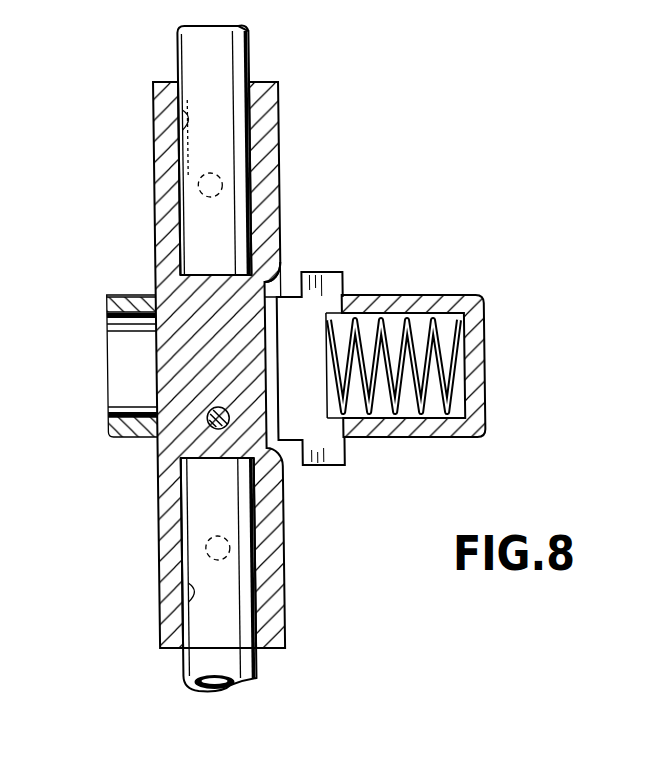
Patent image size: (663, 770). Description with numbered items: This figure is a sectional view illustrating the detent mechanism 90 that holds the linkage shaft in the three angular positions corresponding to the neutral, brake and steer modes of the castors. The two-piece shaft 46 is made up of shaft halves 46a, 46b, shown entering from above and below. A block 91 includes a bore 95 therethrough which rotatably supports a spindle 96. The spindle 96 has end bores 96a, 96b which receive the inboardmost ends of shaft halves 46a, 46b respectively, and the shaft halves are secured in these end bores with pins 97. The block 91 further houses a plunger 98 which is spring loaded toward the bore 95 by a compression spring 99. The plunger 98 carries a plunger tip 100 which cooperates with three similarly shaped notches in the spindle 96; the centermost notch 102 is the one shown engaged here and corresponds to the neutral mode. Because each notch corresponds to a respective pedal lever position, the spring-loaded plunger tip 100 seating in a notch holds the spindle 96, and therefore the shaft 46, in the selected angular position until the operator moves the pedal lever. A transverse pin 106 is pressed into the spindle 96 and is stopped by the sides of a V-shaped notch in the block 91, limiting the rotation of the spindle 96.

The two-piece shaft 46 is at (211, 697).
The shaft half 46a is at (251, 41).
The shaft half 46b is at (249, 668).
The detent mechanism 90 is at (301, 393).
The block 91 is at (433, 296).
The bore 95 is at (152, 440).
The spindle 96 is at (276, 528).
The end bore 96a is at (183, 134).
The end bore 96b is at (180, 597).
The pins 97 is at (196, 190).
The plunger 98 is at (316, 270).
The compression spring 99 is at (433, 372).
The plunger tip 100 is at (270, 423).
The notch 102 is at (283, 295).
The transverse pin 106 is at (203, 410).